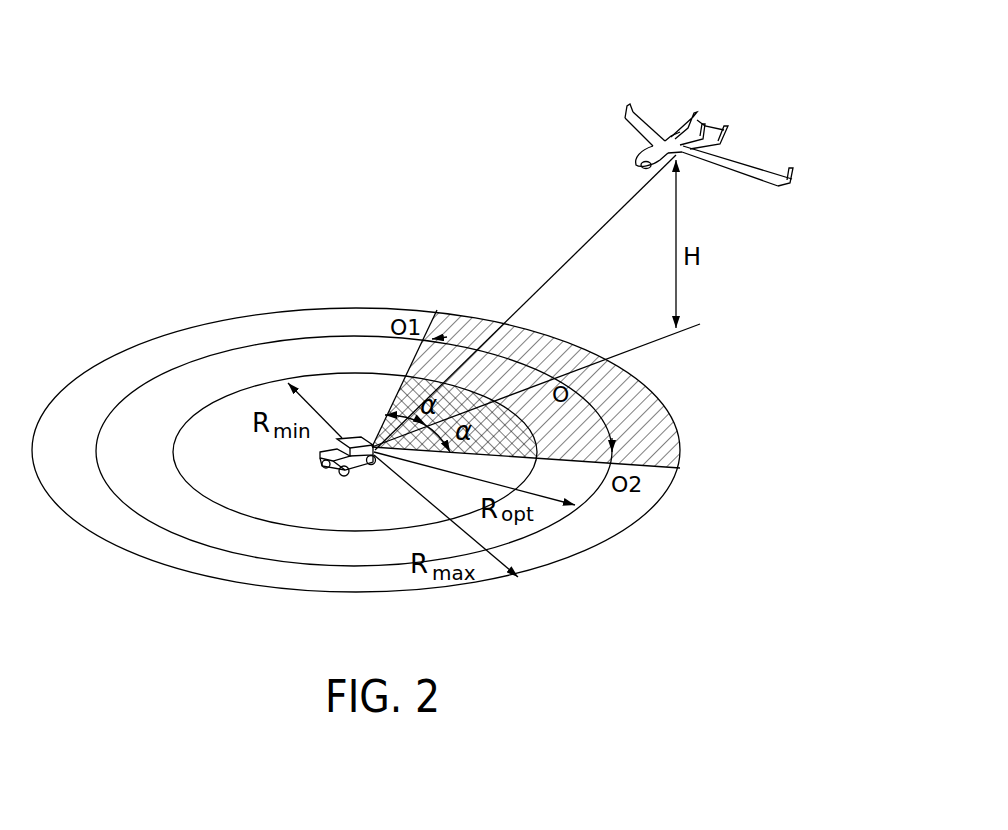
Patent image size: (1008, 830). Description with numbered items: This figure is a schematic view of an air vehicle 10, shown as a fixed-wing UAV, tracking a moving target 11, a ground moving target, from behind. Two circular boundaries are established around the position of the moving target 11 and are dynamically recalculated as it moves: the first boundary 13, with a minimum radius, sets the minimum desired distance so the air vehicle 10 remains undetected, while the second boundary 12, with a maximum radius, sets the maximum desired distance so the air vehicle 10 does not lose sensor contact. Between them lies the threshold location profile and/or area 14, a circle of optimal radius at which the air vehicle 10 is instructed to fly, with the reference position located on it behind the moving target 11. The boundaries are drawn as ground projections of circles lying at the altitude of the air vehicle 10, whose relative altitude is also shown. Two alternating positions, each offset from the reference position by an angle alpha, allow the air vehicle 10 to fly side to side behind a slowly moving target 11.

The air vehicle 10 is at (655, 128).
The moving target 11 is at (354, 436).
The second boundary 12 is at (192, 326).
The first boundary 13 is at (247, 385).
The threshold location profile and/or area 14 is at (148, 380).